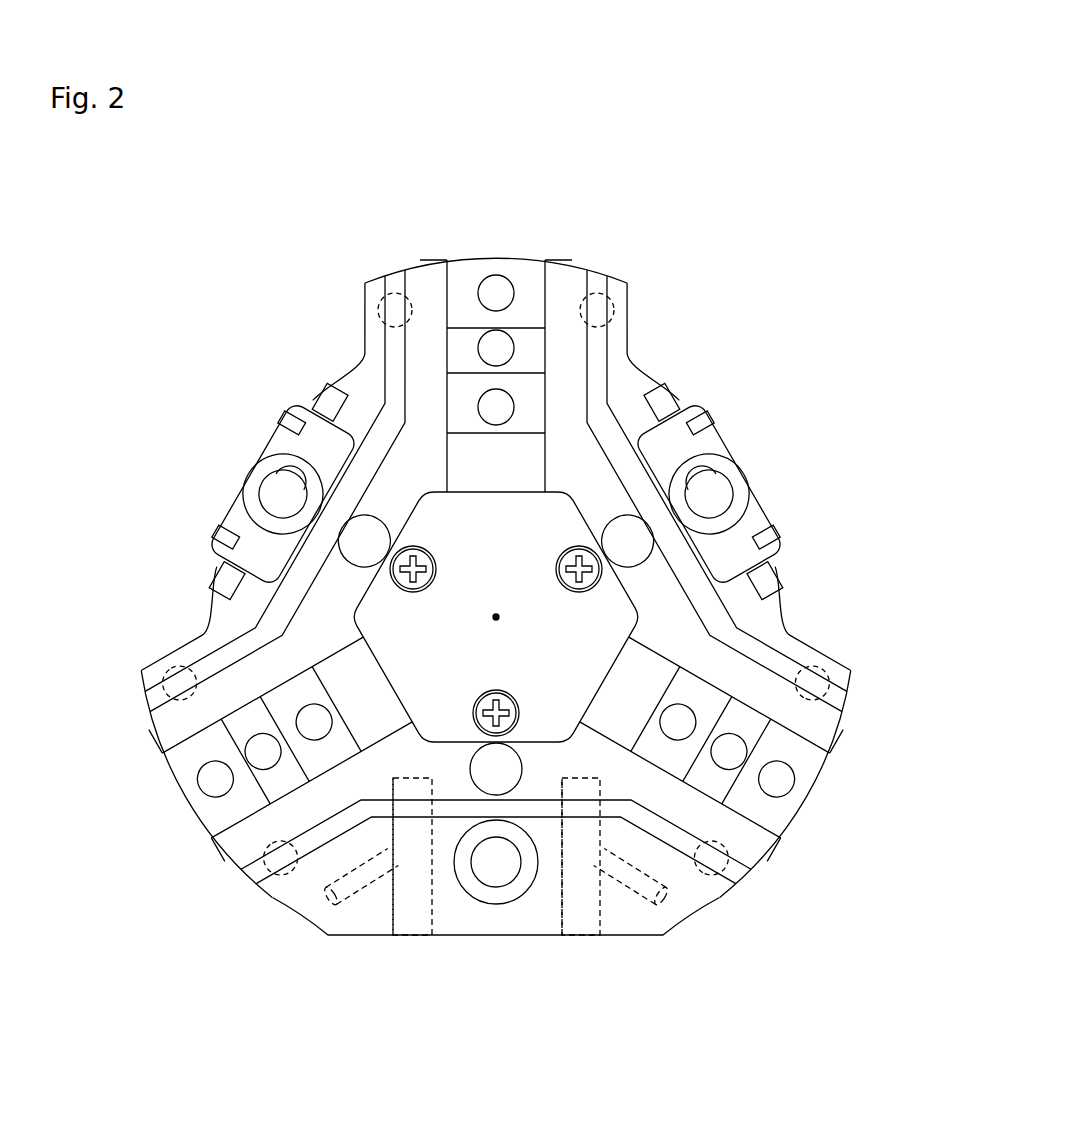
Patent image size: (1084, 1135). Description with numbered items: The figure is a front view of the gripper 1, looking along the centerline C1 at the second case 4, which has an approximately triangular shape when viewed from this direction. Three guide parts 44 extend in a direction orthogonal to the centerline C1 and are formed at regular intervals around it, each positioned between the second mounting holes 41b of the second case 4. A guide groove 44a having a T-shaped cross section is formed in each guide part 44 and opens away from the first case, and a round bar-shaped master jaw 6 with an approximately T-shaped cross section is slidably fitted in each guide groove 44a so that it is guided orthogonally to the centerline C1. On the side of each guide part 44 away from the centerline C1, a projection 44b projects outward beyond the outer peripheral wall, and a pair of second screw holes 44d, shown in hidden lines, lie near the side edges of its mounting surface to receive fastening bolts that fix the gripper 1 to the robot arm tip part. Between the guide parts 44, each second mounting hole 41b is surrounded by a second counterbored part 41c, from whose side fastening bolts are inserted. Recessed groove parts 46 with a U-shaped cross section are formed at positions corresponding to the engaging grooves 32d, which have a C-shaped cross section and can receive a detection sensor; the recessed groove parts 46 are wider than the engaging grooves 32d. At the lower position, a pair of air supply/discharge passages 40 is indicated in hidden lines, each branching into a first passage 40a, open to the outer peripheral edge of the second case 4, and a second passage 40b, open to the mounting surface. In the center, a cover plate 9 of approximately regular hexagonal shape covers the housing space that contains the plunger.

The gripper 1 is at (642, 93).
The second case 4 is at (624, 281).
The master jaw 6 is at (556, 260).
The cover plate 9 is at (642, 622).
The centerline C1 is at (500, 620).
The engaging groove 32d is at (300, 428).
The air supply/discharge passage 40 is at (375, 913).
The first passage 40a is at (399, 920).
The second passage 40b is at (338, 906).
The second mounting hole 41b is at (284, 494).
The second counterbored part 41c is at (250, 510).
The guide part 44 is at (416, 269).
The guide groove 44a is at (453, 262).
The projection 44b is at (564, 308).
The second screw hole 44d is at (378, 308).
The recessed groove part 46 is at (325, 408).